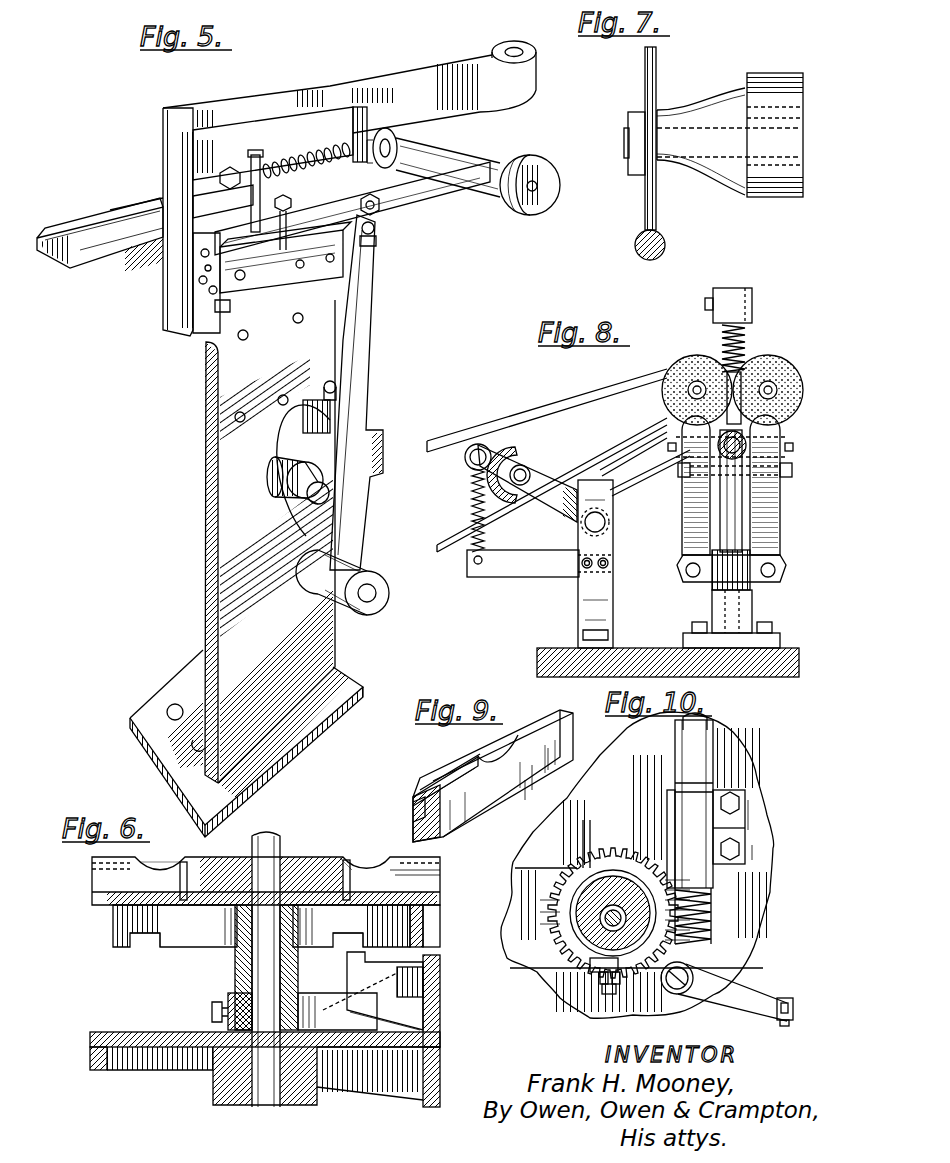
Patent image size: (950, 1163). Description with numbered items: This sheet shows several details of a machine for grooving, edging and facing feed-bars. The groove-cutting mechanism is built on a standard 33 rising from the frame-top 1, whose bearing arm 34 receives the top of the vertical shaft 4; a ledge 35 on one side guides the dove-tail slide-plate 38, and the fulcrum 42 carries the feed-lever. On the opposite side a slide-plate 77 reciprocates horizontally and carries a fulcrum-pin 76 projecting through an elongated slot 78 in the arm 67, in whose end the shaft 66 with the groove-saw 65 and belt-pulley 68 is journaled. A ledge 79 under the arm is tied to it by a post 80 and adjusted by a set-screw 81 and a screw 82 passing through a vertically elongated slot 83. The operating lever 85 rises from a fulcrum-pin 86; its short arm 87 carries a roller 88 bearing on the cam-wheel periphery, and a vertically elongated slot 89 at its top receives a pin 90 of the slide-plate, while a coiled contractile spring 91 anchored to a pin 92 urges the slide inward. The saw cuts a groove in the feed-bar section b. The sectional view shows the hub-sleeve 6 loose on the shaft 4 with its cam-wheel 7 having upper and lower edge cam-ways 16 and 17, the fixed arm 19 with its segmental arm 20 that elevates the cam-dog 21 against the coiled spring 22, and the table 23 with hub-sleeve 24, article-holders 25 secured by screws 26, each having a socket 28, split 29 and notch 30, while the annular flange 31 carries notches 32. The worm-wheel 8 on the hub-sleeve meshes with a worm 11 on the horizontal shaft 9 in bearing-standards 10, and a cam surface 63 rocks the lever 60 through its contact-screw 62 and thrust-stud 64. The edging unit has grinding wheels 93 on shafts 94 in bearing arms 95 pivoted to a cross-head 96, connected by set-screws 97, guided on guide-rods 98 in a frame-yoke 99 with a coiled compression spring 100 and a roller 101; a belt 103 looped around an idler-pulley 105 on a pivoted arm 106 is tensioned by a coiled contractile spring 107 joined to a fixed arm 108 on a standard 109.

In FIG. 8, the frame-top 1 is at (633, 648).
In FIG. 10, the frame-top 1 is at (540, 987).
In FIG. 10, the vertical shaft 4 is at (597, 923).
In FIG. 6, the vertical shaft 4 is at (272, 850).
In FIG. 10, the hub-sleeve 6 is at (597, 910).
In FIG. 6, the hub-sleeve 6 is at (220, 1077).
In FIG. 6, the cam-wheel 7 is at (90, 1050).
In FIG. 10, the worm-wheel 8 is at (585, 860).
In FIG. 10, the horizontal shaft 9 is at (707, 722).
In FIG. 10, the bearing-standards 10 is at (706, 804).
In FIG. 10, the worm 11 is at (712, 920).
In FIG. 6, the upper edge cam-way 16 is at (423, 963).
In FIG. 6, the lower edge cam-way 17 is at (430, 1103).
In FIG. 6, the arm 19 is at (230, 993).
In FIG. 6, the segmental arm 20 is at (310, 1003).
In FIG. 6, the cam-dog 21 is at (373, 991).
In FIG. 6, the coiled spring 22 is at (423, 992).
In FIG. 6, the table 23 is at (225, 902).
In FIG. 6, the hub-sleeve 24 is at (287, 943).
In FIG. 9, the article-holder 25 is at (500, 797).
In FIG. 6, the article-holder 25 is at (115, 878).
In FIG. 6, the screws 26 is at (350, 867).
In FIG. 9, the stock-bar receiving socket 28 is at (413, 790).
In FIG. 9, the split 29 is at (453, 765).
In FIG. 6, the split 29 is at (420, 868).
In FIG. 9, the notch 30 is at (490, 755).
In FIG. 6, the notch 30 is at (162, 862).
In FIG. 6, the annular flange 31 is at (423, 932).
In FIG. 6, the notches 32 is at (353, 943).
In FIG. 5, the standard 33 is at (233, 480).
In FIG. 5, the bearing arm 34 is at (414, 70).
In FIG. 5, the ledge 35 is at (147, 253).
In FIG. 5, the slide-plate 38 is at (90, 253).
In FIG. 5, the fulcrum 42 is at (293, 500).
In FIG. 10, the lever 60 is at (747, 997).
In FIG. 10, the contact-screw 62 is at (600, 965).
In FIG. 10, the cam surface 63 is at (622, 877).
In FIG. 10, the thrust-stud 64 is at (777, 1013).
In FIG. 5, the groove-saw 65 is at (388, 130).
In FIG. 7, the groove-saw 65 is at (656, 76).
In FIG. 5, the shaft 66 is at (537, 185).
In FIG. 5, the arm 67 is at (430, 178).
In FIG. 7, the arm 67 is at (773, 92).
In FIG. 5, the belt-pulley 68 is at (534, 150).
In FIG. 5, the fulcrum-pin 76 is at (383, 210).
In FIG. 5, the slide-plate 77 is at (233, 200).
In FIG. 5, the elongated slot 78 is at (390, 198).
In FIG. 5, the ledge 79 is at (270, 278).
In FIG. 5, the post 80 is at (263, 160).
In FIG. 5, the set-screw 81 is at (292, 208).
In FIG. 5, the screw 82 is at (200, 270).
In FIG. 5, the vertically elongated slot 83 is at (178, 331).
In FIG. 5, the operating lever 85 is at (362, 377).
In FIG. 5, the fulcrum-pin 86 is at (377, 593).
In FIG. 5, the short arm 87 is at (300, 420).
In FIG. 5, the roller 88 is at (323, 388).
In FIG. 5, the vertically elongated slot 89 is at (370, 242).
In FIG. 5, the pin 90 is at (375, 232).
In FIG. 5, the coiled contractile spring 91 is at (323, 160).
In FIG. 5, the pin 92 is at (358, 135).
In FIG. 8, the grinding wheels 93 is at (697, 358).
In FIG. 8, the shafts 94 is at (690, 392).
In FIG. 8, the bearing arms 95 is at (687, 502).
In FIG. 8, the cross-head 96 is at (730, 567).
In FIG. 8, the set-screws 97 is at (670, 463).
In FIG. 8, the guide-rods 98 is at (727, 527).
In FIG. 8, the frame-yoke 99 is at (733, 295).
In FIG. 8, the coiled compression spring 100 is at (747, 332).
In FIG. 8, the roller 101 is at (753, 445).
In FIG. 8, the belt 103 is at (513, 417).
In FIG. 8, the idler-pulley 105 is at (530, 460).
In FIG. 8, the pivoted arm 106 is at (538, 478).
In FIG. 8, the coiled contractile spring 107 is at (470, 513).
In FIG. 8, the fixed arm 108 is at (500, 570).
In FIG. 8, the standard 109 is at (577, 603).
In FIG. 7, the feed-bar section b is at (665, 245).